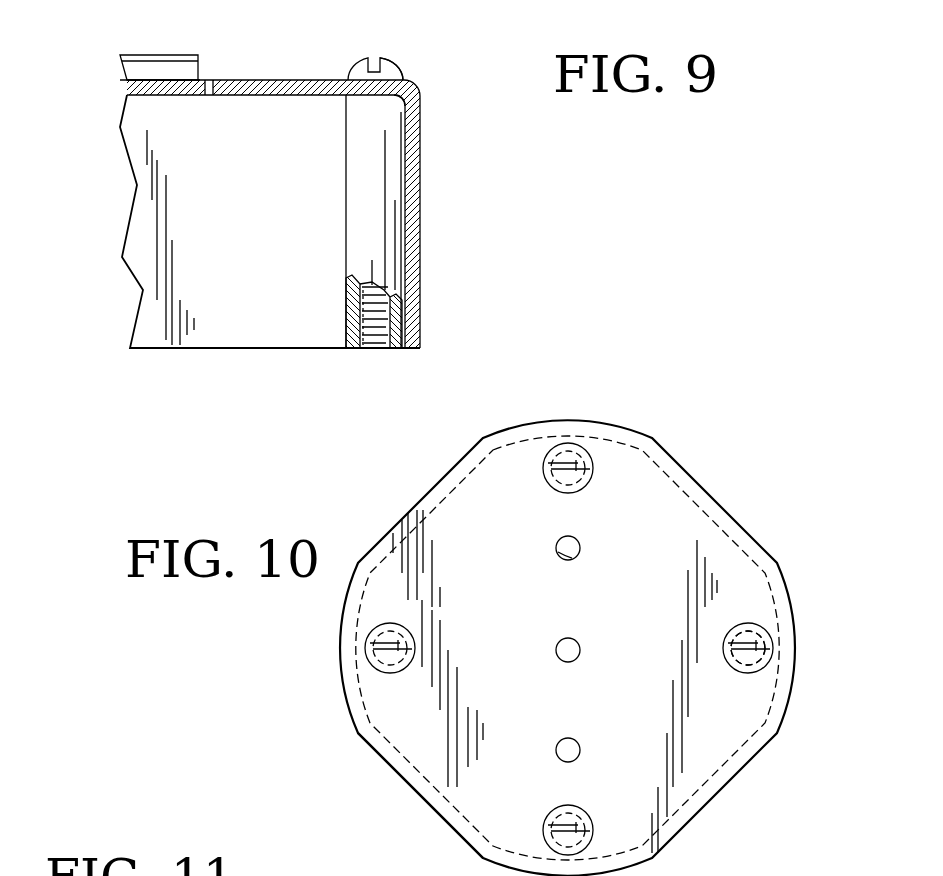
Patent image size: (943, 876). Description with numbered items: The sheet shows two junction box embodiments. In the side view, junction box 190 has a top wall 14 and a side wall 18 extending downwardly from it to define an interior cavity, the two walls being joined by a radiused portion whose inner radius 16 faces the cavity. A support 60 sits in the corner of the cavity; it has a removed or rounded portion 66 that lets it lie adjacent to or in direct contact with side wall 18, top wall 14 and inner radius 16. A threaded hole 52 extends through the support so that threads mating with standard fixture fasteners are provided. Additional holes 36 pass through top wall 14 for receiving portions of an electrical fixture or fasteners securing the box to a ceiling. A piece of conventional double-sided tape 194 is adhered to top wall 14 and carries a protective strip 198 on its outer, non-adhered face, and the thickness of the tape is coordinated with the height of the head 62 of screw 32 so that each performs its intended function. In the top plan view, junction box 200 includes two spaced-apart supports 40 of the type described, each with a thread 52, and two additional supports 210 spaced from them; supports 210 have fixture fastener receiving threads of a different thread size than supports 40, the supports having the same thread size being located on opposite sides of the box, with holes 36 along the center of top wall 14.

In FIG. 9, the top wall 14 is at (238, 80).
In FIG. 10, the top wall 14 is at (513, 530).
In FIG. 9, the inner radiused portion 16 is at (421, 95).
In FIG. 9, the side wall 18 is at (428, 185).
In FIG. 10, the side wall 18 is at (417, 797).
In FIG. 9, the screw 32 is at (407, 68).
In FIG. 10, the screw 32 is at (765, 673).
In FIG. 9, the additional holes 36 is at (205, 96).
In FIG. 10, the additional holes 36 is at (568, 560).
In FIG. 10, the supplemental support 40 is at (767, 605).
In FIG. 9, the threaded hole 52 is at (360, 341).
In FIG. 9, the support 60 is at (344, 261).
In FIG. 9, the head 62 is at (385, 57).
In FIG. 9, the radiused portion 66 is at (395, 98).
In FIG. 9, the junction box 190 is at (114, 234).
In FIG. 9, the double-sided tape 194 is at (122, 77).
In FIG. 9, the protective strip 198 is at (163, 54).
In FIG. 10, the junction box 200 is at (715, 476).
In FIG. 10, the additional support 210 is at (599, 445).